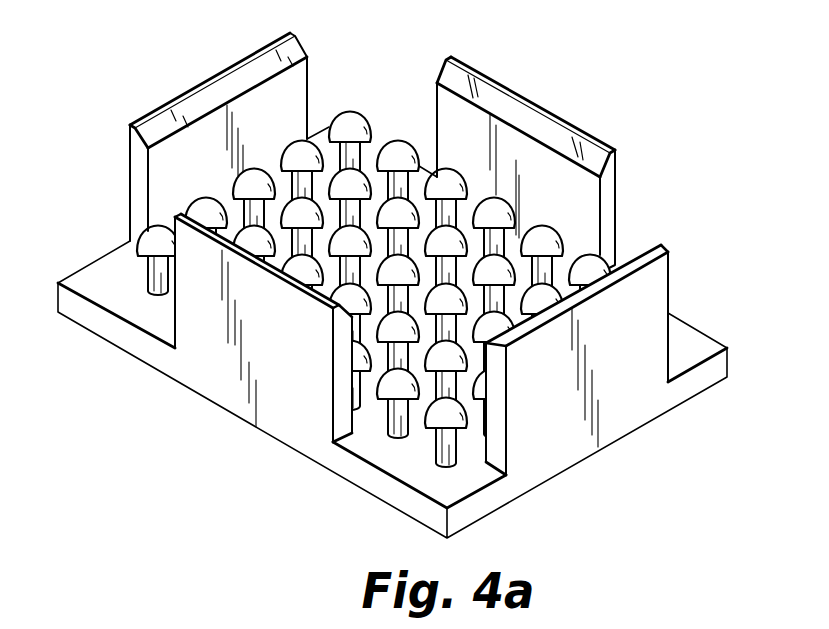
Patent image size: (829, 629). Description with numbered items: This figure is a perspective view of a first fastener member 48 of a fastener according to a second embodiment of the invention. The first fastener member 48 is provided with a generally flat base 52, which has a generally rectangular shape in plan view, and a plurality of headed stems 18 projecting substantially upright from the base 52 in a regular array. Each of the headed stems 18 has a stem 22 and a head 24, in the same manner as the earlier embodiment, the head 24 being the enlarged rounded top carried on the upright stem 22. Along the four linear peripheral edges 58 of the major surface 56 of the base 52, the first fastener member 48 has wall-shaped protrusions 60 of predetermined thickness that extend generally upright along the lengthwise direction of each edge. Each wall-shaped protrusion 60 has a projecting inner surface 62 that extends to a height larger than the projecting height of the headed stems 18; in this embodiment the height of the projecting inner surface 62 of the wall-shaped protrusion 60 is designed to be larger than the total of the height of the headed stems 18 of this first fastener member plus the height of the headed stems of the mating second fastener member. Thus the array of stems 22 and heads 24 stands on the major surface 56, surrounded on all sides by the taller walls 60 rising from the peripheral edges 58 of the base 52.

The headed stems 18 is at (407, 287).
The stem 22 is at (435, 443).
The head 24 is at (604, 258).
The first fastener member 48 is at (412, 278).
The base 52 is at (412, 332).
The major surface 56 is at (102, 272).
The peripheral edges 58 is at (704, 376).
The wall-shaped protrusions 60 is at (143, 120).
The projecting inner surface 62 is at (260, 103).